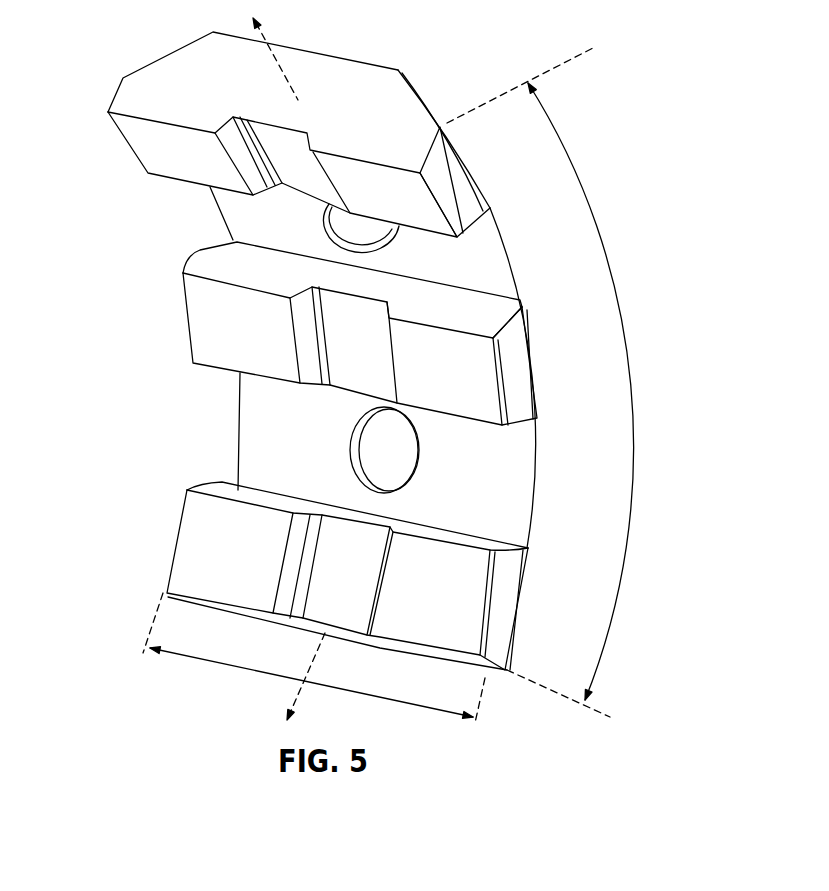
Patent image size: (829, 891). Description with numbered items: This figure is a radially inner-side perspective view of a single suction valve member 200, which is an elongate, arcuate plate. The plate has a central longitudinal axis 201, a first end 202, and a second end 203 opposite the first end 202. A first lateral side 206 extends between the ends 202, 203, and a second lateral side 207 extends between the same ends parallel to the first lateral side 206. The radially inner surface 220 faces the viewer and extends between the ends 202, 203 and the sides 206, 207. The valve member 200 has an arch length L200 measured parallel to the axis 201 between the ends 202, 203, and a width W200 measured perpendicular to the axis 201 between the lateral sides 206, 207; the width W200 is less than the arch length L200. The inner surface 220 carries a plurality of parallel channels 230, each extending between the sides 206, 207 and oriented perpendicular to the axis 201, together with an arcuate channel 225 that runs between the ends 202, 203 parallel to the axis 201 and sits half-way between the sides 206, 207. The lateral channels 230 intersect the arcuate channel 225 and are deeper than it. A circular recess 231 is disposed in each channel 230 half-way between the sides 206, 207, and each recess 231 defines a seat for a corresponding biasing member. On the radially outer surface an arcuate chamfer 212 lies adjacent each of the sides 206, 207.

The suction valve member 200 is at (128, 88).
The longitudinal axis 201 is at (263, 32).
The first end 202 is at (382, 78).
The second end 203 is at (290, 630).
The first lateral side 206 is at (190, 320).
The second lateral side 207 is at (518, 365).
The arcuate chamfer 212 is at (507, 603).
The radially inner surface 220 is at (192, 557).
The arcuate channel 225 is at (340, 343).
The parallel channel 230 is at (232, 214).
The circular recess 231 is at (400, 226).
The width W200 is at (258, 673).
The arch length L200 is at (633, 387).